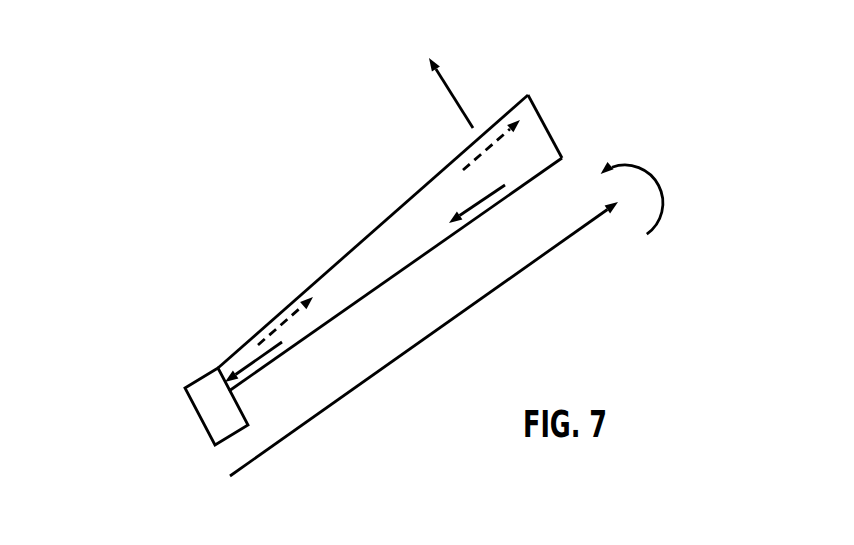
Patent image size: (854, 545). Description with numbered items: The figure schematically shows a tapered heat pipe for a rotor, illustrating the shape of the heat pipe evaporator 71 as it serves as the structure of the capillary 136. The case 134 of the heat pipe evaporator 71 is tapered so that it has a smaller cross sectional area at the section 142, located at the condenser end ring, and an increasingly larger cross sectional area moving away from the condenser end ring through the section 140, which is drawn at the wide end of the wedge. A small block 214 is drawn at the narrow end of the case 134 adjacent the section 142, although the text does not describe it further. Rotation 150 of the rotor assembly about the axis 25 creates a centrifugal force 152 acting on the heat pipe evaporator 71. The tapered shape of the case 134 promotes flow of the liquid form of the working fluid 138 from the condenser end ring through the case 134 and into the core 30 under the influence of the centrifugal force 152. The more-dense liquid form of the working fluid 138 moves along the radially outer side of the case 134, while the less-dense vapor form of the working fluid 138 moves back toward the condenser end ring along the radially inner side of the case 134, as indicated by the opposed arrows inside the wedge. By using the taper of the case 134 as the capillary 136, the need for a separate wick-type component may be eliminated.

The heat pipe evaporator 71 is at (348, 216).
The capillary 136 is at (338, 262).
The case 134 is at (427, 248).
The section 140 is at (528, 97).
The working fluid 138 is at (503, 185).
The section 142 is at (223, 378).
The detector / sensor block 214 is at (193, 407).
The axis 25 is at (402, 357).
The core 30 is at (408, 322).
The centrifugal force 152 is at (450, 87).
The rotation 150 is at (647, 168).